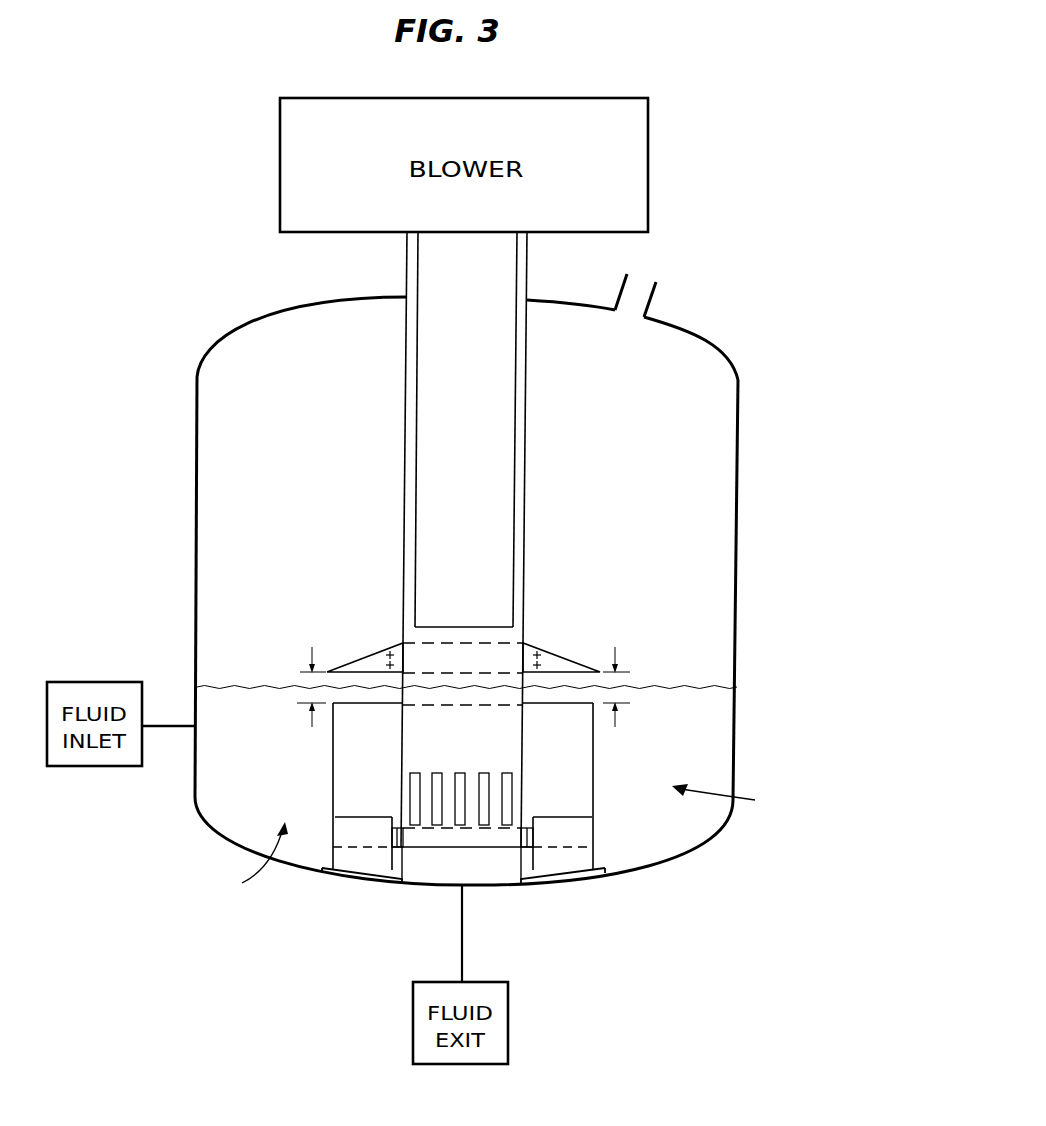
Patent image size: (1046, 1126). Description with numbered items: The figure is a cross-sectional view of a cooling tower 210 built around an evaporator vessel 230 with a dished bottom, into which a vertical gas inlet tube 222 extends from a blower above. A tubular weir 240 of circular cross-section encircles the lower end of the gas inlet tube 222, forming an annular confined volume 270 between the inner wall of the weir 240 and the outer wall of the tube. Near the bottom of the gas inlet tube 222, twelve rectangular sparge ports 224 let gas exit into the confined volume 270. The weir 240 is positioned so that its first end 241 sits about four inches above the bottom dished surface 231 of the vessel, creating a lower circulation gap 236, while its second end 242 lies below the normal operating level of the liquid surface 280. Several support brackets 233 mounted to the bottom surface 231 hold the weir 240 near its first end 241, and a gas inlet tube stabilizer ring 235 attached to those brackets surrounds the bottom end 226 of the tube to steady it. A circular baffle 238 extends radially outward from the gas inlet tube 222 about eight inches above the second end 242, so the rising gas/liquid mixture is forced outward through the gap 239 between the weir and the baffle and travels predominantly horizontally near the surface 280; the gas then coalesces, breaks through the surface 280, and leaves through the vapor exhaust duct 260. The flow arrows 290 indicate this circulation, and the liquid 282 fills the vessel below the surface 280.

The cooling tower 210 is at (506, 591).
The gas inlet tube 222 is at (524, 478).
The sparge ports 224 is at (510, 793).
The bottom end of the gas inlet tube 226 is at (492, 850).
The evaporator vessel 230 is at (497, 602).
The bottom dished surface 231 is at (623, 877).
The support brackets 233 is at (393, 852).
The gas inlet tube stabilizer ring 235 is at (398, 852).
The lower circulation gap 236 is at (596, 857).
The baffle 238 is at (572, 657).
The gap 239 is at (297, 679).
The weir 240 is at (566, 786).
The first end of the weir 241 is at (597, 848).
The second end of the weir 242 is at (607, 708).
The vapor exhaust duct 260 is at (642, 281).
The confined volume 270 is at (463, 786).
The liquid surface 280 is at (707, 689).
The fluid 282 is at (215, 930).
The fluid flow 290 is at (497, 841).